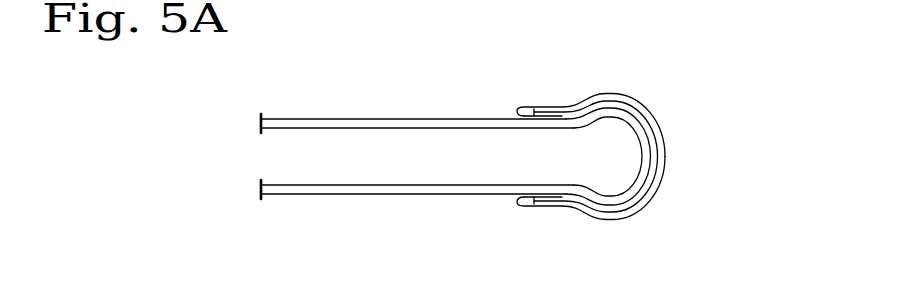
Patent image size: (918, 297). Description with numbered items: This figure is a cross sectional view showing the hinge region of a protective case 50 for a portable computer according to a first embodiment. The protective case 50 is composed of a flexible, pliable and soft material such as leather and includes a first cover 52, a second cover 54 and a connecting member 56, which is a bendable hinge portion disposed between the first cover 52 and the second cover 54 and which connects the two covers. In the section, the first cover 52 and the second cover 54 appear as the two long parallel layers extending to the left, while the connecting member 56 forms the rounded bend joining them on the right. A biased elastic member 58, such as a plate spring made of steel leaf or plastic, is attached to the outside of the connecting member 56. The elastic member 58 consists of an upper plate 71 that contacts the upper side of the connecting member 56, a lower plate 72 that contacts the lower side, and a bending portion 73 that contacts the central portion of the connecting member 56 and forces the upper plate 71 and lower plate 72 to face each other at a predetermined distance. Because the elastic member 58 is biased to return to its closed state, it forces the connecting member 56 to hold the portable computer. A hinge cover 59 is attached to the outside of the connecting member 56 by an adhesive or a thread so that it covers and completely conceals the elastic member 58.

The protective case 50 is at (712, 146).
The first cover 52 is at (382, 123).
The second cover 54 is at (383, 192).
The connecting member 56 is at (661, 163).
The elastic member 58 is at (648, 120).
The hinge cover 59 is at (620, 93).
The upper plate 71 is at (543, 112).
The lower plate 72 is at (543, 200).
The bending portion 73 is at (626, 211).